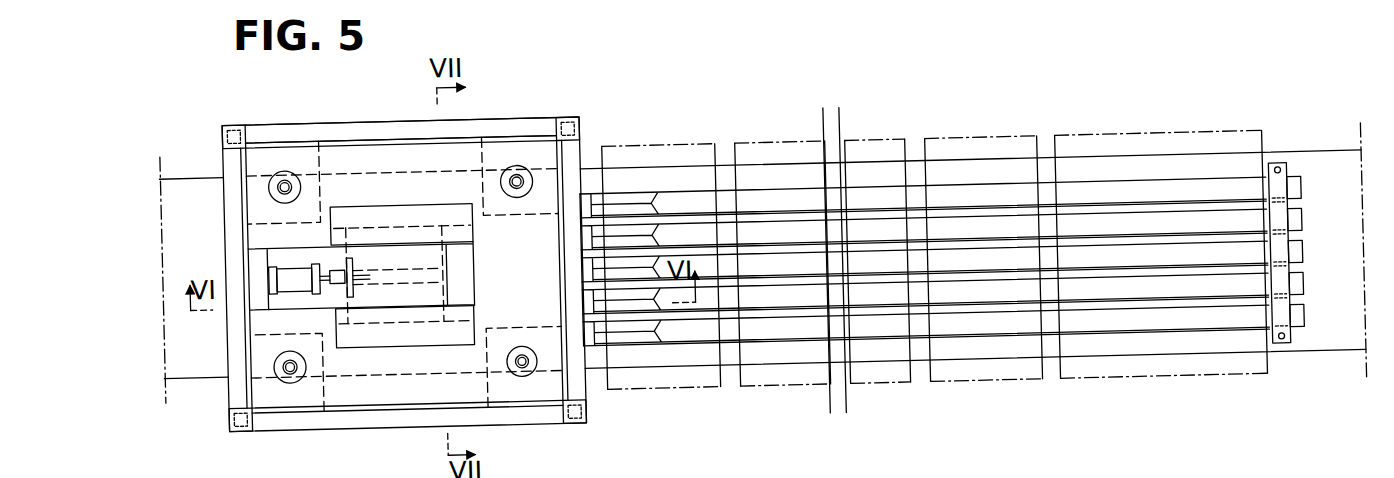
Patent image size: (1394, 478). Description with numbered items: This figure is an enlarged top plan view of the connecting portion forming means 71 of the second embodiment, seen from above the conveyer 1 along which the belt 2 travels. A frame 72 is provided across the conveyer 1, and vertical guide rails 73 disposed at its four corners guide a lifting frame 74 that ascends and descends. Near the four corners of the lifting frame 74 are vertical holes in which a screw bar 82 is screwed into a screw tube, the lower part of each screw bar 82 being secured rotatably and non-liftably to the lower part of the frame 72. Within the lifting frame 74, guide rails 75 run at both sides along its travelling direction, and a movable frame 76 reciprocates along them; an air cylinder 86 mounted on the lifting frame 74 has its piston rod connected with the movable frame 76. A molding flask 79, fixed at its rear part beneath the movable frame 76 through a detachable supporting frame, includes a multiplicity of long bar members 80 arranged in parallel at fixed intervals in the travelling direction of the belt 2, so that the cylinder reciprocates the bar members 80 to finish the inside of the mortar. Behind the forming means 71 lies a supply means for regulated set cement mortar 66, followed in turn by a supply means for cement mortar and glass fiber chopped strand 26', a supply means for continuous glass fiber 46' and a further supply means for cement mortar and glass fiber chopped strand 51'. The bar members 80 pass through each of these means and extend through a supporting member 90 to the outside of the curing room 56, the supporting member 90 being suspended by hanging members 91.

The conveyer 1 is at (200, 372).
The belt 2 is at (1324, 188).
The supply means for cement mortar and glass fiber chopped strand 26' is at (782, 224).
The supply means for continuous glass fiber 46' is at (877, 223).
The supply means for cement mortar and glass fiber chopped strand 51' is at (983, 221).
The curing room 56 is at (1124, 140).
The supply means for regulated set cement mortar 66 is at (677, 136).
The connecting portion forming means 71 is at (510, 113).
The frame 72 is at (296, 128).
The vertical guide rails 73 is at (550, 145).
The lifting frame 74 is at (412, 158).
The guide rails 75 is at (402, 320).
The movable frame 76 is at (368, 295).
The molding flask 79 is at (888, 380).
The long bar members 80 is at (982, 268).
The screw bar 82 is at (519, 354).
The air cylinder 86 is at (293, 268).
The supporting member 90 is at (1295, 302).
The hanging members 91 is at (1282, 183).